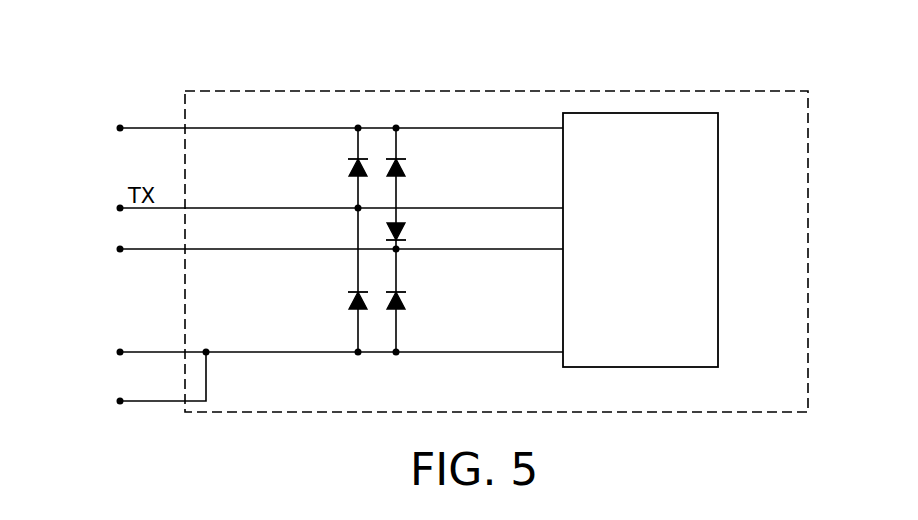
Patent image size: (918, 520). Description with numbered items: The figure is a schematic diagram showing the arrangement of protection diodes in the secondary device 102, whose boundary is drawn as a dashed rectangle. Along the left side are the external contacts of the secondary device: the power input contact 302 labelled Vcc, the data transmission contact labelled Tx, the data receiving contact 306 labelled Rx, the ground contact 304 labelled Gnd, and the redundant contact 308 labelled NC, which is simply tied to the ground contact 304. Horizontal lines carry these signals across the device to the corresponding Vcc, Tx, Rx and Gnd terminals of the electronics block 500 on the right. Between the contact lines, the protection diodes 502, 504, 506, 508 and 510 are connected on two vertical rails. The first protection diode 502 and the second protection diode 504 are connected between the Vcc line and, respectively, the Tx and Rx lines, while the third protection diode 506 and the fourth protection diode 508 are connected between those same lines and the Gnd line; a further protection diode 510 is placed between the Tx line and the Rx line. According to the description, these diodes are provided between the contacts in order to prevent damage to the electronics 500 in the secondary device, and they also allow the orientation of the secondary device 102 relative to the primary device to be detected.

The secondary device 102 is at (505, 91).
The power input contact 302 is at (120, 128).
The ground contact 304 is at (120, 352).
The data receiving contact 306 is at (120, 249).
The redundant contact 308 is at (120, 401).
The electronics of the secondary device 500 is at (718, 236).
The protection diode 502 is at (348, 167).
The protection diode 504 is at (407, 167).
The protection diode 506 is at (348, 300).
The protection diode 508 is at (407, 300).
The protection diode 510 is at (407, 232).